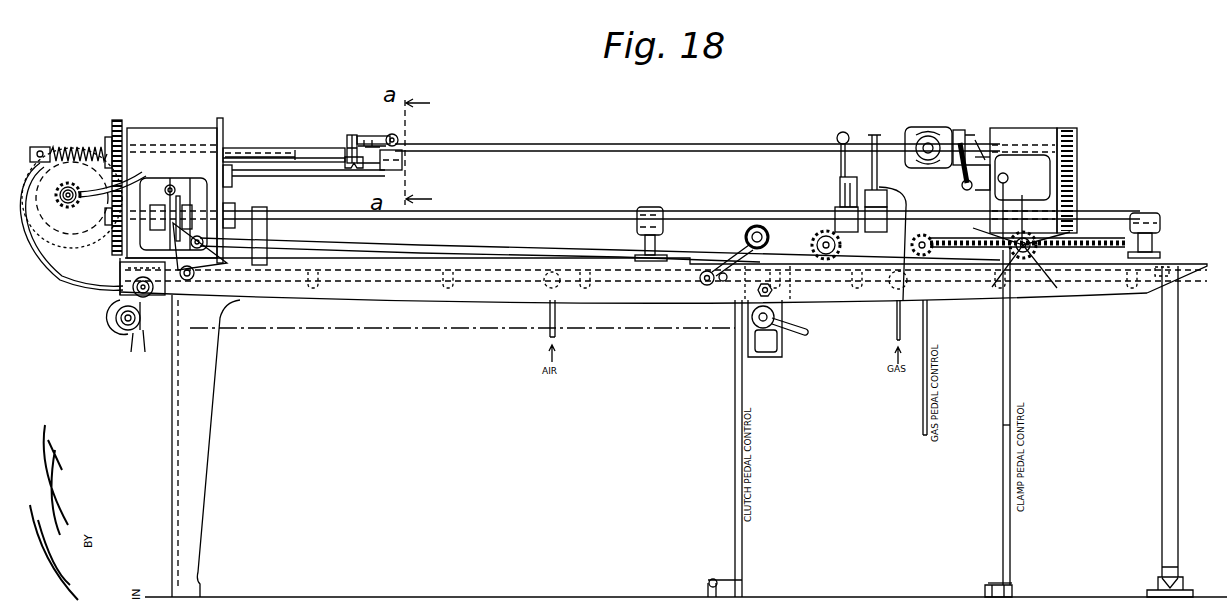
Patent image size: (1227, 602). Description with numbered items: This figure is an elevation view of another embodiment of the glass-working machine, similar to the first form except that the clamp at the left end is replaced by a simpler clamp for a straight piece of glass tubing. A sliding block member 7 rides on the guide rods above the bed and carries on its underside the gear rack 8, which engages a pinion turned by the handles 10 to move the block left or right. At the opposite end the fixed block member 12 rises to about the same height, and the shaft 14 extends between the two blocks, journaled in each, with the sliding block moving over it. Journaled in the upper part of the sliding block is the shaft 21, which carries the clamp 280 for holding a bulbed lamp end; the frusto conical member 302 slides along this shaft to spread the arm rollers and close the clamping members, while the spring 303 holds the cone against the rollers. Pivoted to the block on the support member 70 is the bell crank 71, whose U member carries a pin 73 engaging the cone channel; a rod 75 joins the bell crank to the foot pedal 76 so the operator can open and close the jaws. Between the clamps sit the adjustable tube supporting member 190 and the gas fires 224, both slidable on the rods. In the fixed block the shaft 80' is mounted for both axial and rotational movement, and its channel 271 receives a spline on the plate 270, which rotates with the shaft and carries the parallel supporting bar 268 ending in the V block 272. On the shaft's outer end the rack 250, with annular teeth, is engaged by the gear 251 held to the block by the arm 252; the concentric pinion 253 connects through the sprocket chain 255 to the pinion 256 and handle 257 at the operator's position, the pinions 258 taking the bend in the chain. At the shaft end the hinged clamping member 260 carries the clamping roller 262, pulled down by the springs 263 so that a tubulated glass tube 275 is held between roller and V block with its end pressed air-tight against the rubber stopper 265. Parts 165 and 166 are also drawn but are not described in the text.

The block member 7 is at (1079, 149).
The gear rack 8 is at (1097, 240).
The handles 10 is at (1012, 265).
The block member 12 is at (172, 133).
The shaft 14 is at (702, 210).
The shaft 21 is at (982, 160).
The support member 70 is at (990, 187).
The bell crank 71 is at (975, 157).
The pin 73 is at (960, 143).
The rod 75 is at (1003, 428).
The foot pedal 76 is at (993, 584).
The shaft 80' is at (260, 141).
The roller bracket 165 is at (122, 266).
The gear 166 is at (114, 122).
The tube supporting member 190 is at (840, 178).
The gas fires 224 is at (892, 217).
The rack 250 is at (66, 148).
The gear 251 is at (44, 190).
The arm 252 is at (112, 188).
The pinion 253 is at (68, 207).
The sprocket chain 255 is at (332, 329).
The pinion 256 is at (778, 315).
The handle 257 is at (808, 333).
The pinions 258 is at (133, 338).
The hinged clamping member 260 is at (372, 138).
The clamping roller 262 is at (391, 133).
The springs 263 is at (348, 150).
The rubber stopper 265 is at (360, 170).
The supporting bar 268 is at (291, 178).
The plate 270 is at (224, 125).
The channel 271 is at (240, 150).
The V block 272 is at (402, 166).
The tubulated glass tube 275 is at (568, 139).
The clamp 280 is at (921, 137).
The frusto conical member 302 is at (948, 130).
The spring 303 is at (1015, 177).